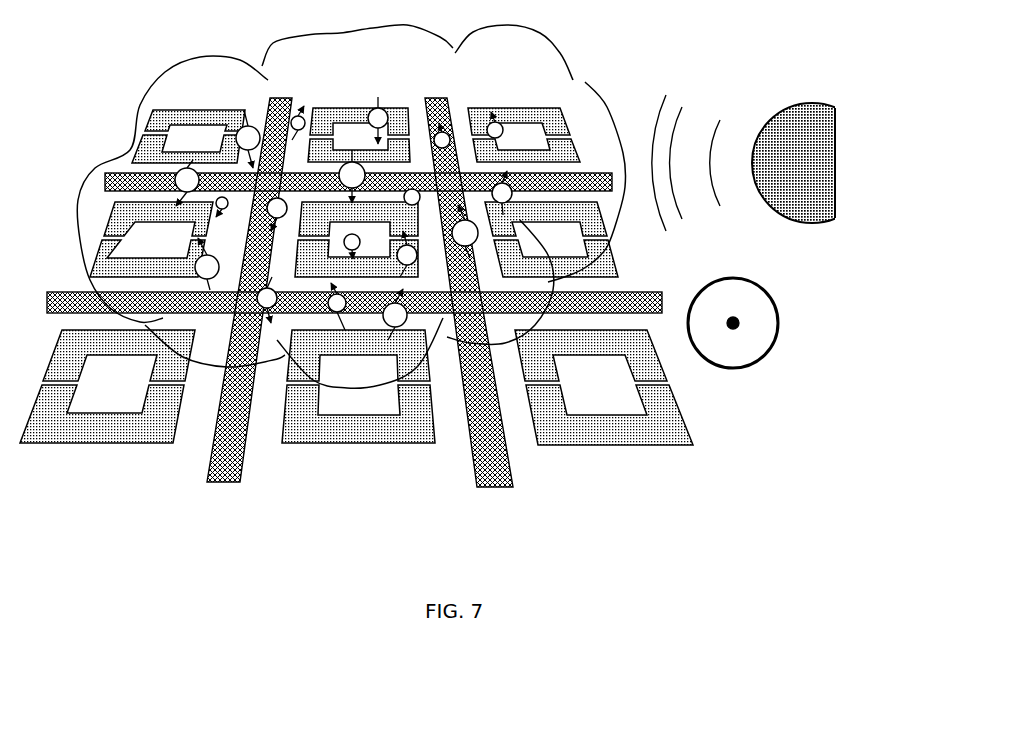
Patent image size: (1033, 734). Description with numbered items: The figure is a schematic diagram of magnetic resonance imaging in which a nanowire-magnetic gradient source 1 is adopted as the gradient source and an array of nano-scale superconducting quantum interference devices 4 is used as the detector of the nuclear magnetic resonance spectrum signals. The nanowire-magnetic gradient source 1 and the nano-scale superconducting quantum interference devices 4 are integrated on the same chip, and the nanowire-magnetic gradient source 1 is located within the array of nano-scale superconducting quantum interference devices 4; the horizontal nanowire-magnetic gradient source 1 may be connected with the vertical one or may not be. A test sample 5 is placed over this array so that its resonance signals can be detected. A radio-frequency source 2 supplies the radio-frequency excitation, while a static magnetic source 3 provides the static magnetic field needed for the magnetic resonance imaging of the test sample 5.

The nanowire-magnetic gradient source 1 is at (695, 280).
The radio-frequency source 2 is at (805, 186).
The static magnetic source 3 is at (760, 323).
The nano-scale superconducting quantum interference device 4 is at (666, 246).
The test sample 5 is at (583, 82).